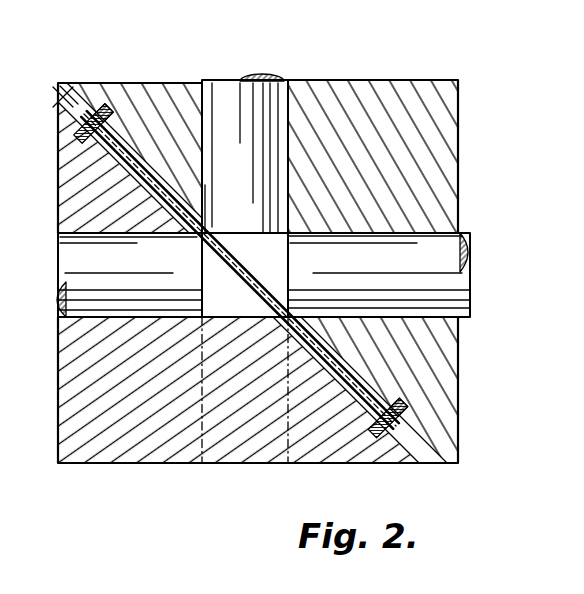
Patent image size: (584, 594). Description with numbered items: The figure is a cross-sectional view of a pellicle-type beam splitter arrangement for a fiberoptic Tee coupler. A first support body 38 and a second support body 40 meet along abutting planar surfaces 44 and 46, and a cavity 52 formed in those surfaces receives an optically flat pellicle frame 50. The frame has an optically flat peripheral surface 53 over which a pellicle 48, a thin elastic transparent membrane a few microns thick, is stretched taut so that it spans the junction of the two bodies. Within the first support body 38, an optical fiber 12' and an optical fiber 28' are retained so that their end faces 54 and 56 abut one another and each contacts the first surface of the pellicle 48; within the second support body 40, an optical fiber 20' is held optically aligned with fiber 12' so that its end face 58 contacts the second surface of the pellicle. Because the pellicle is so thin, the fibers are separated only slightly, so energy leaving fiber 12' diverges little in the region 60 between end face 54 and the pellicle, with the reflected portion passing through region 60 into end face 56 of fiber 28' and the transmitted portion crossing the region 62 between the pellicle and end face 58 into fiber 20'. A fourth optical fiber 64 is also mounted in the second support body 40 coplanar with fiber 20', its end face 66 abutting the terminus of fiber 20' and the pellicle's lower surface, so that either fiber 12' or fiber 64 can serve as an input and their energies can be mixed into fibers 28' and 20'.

The optical fiber 12' is at (285, 275).
The optical fiber 20' is at (41, 340).
The optical fiber 28' is at (256, 134).
The first support body 38 is at (395, 103).
The second support body 40 is at (122, 452).
The planar surface 44 is at (72, 102).
The planar surface 46 is at (75, 120).
The pellicle 48 is at (246, 281).
The pellicle frame 50 is at (80, 157).
The cavity 52 is at (158, 178).
The peripheral surface 53 is at (112, 131).
The end face 54 is at (288, 268).
The end face 56 is at (233, 230).
The end face 58 is at (203, 262).
The region 60 is at (300, 229).
The region 62 is at (188, 320).
The fourth optical fiber 64 is at (233, 445).
The end face 66 is at (240, 318).